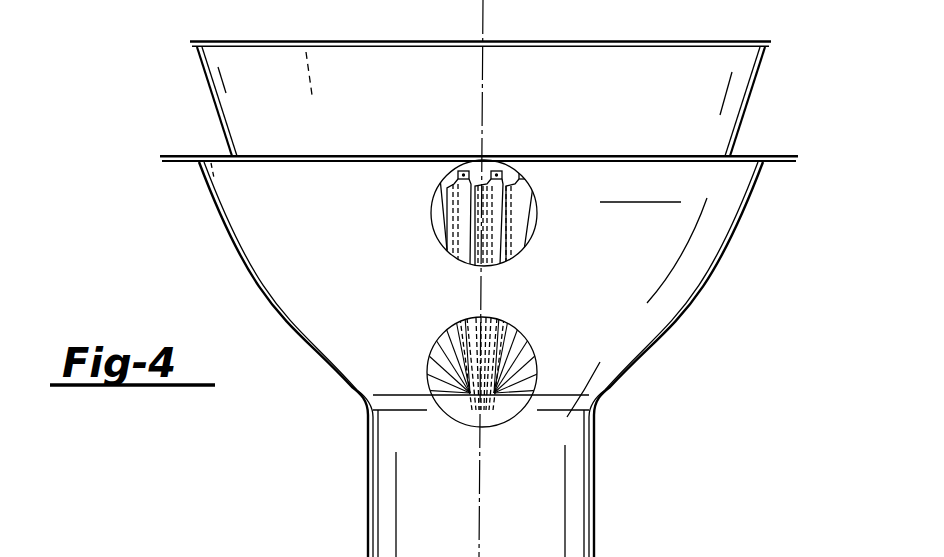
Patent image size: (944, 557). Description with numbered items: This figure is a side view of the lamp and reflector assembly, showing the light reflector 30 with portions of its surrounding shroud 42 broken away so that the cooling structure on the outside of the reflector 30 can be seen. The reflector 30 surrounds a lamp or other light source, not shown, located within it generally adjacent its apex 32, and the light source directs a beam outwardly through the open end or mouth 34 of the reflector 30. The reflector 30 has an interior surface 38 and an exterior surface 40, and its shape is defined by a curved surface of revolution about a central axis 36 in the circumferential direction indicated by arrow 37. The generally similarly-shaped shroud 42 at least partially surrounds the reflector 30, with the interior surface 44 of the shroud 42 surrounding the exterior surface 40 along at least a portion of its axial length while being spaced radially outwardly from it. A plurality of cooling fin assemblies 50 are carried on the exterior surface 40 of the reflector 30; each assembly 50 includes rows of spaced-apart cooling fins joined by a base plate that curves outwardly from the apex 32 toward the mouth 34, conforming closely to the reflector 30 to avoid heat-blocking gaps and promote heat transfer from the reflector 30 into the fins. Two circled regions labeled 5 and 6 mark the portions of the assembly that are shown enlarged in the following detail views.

The light reflector 30 is at (214, 43).
The apex 32 is at (452, 410).
The mouth 34 is at (655, 44).
The central axis 36 is at (484, 18).
The arrow 37 is at (627, 203).
The interior surface 38 is at (306, 47).
The exterior surface 40 is at (230, 110).
The shroud 42 is at (284, 289).
The interior surface of the shroud 44 is at (210, 160).
The cooling fin assemblies 50 is at (460, 172).
The detail area of FIG. 5 is at (452, 186).
The detail area of FIG. 6 is at (532, 324).